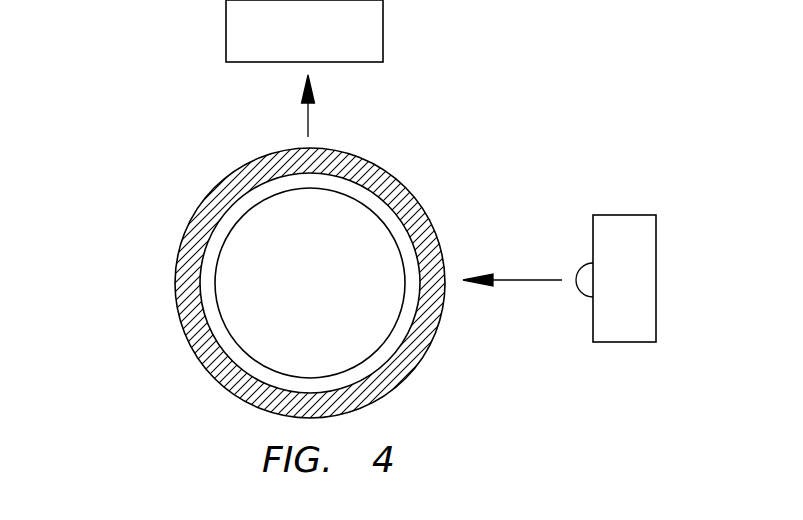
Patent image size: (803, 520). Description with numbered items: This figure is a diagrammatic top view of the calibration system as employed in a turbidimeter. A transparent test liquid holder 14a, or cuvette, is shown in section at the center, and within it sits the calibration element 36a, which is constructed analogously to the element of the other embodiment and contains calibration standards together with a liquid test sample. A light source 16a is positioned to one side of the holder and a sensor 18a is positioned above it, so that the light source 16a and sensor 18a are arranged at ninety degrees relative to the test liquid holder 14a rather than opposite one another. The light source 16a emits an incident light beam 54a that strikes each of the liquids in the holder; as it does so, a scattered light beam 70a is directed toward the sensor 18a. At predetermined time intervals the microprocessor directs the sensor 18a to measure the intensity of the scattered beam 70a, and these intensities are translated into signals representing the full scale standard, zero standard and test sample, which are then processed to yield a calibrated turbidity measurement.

The test liquid holder 14a is at (177, 248).
The calibration element 36a is at (229, 230).
The sensor 18a is at (383, 25).
The scattered light beam 70a is at (310, 125).
The light source 16a is at (630, 342).
The incident light beam 54a is at (532, 280).